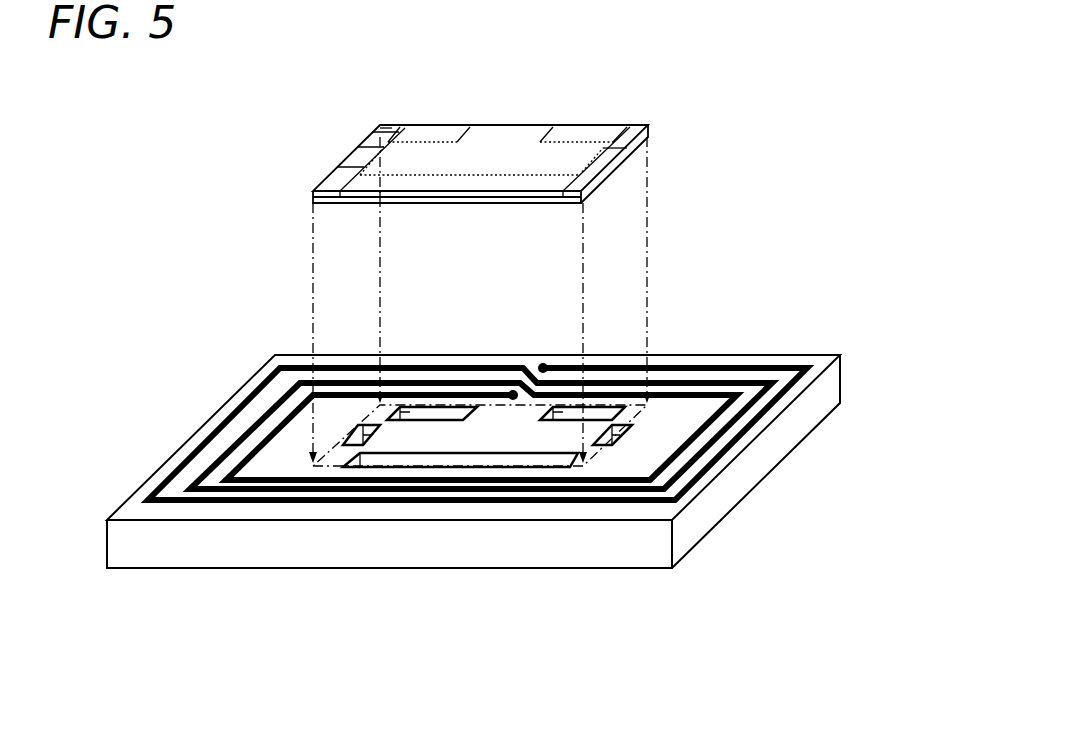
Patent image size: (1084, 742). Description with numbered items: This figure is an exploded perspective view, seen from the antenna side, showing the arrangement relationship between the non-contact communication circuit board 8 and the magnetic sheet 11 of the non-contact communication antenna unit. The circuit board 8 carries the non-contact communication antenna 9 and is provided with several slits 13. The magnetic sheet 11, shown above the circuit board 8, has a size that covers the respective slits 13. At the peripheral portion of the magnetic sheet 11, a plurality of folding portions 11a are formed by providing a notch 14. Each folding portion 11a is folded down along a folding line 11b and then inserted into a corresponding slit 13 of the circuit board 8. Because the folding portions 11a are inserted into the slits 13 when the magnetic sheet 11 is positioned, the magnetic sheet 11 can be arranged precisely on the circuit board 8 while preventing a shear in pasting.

The non-contact communication circuit board 8 is at (715, 361).
The non-contact communication antenna 9 is at (748, 366).
The magnetic sheet 11 is at (500, 155).
The folding portion 11a is at (447, 132).
The folding line 11b is at (422, 128).
The slit 13 is at (392, 413).
The notch 14 is at (380, 128).